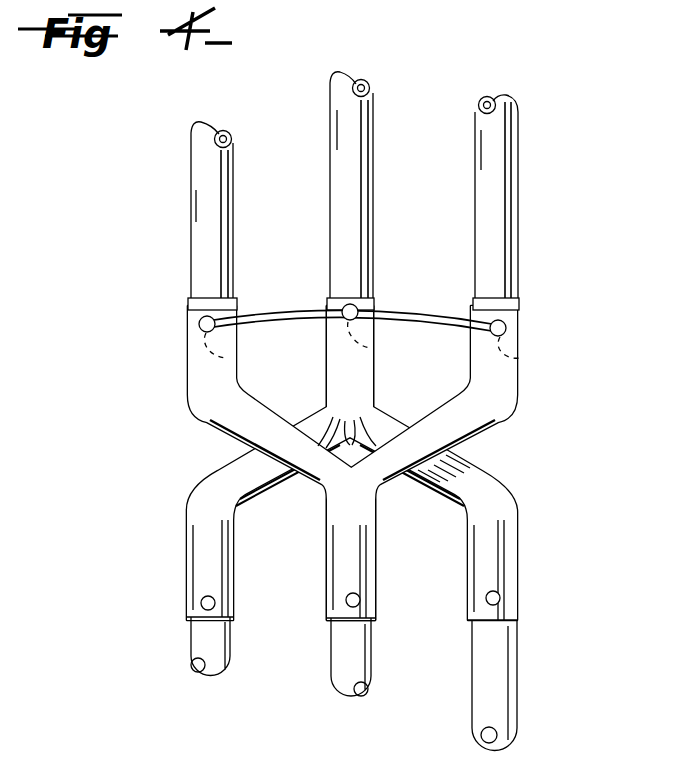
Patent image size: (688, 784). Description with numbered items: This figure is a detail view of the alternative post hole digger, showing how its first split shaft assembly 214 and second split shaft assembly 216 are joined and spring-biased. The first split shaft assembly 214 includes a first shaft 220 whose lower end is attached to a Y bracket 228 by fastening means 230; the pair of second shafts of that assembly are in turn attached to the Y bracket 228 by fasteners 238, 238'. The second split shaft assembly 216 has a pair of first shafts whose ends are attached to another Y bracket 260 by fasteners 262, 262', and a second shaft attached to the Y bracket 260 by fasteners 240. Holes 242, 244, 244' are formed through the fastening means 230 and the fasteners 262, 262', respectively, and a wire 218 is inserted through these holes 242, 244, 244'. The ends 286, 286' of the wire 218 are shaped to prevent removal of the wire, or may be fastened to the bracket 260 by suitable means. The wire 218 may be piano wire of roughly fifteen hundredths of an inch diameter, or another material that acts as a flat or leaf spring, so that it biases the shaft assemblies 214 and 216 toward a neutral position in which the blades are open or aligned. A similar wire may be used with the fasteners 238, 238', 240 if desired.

The first split shaft assembly 214 is at (322, 207).
The first shaft 220 is at (373, 220).
The second split shaft assembly 216 is at (517, 189).
The wire 218 is at (280, 306).
The fastening means 230 is at (357, 303).
The fastener 262 is at (165, 303).
The fastener 262' is at (551, 334).
The end of wire 286 is at (169, 318).
The end of wire 286' is at (543, 337).
The Y bracket 260 is at (190, 390).
The Y bracket 228 is at (519, 496).
The hole 244 is at (253, 340).
The hole 242 is at (394, 339).
The hole 244' is at (454, 358).
The fastener 238 is at (251, 609).
The fastener 240 is at (361, 600).
The fastener 238' is at (551, 605).